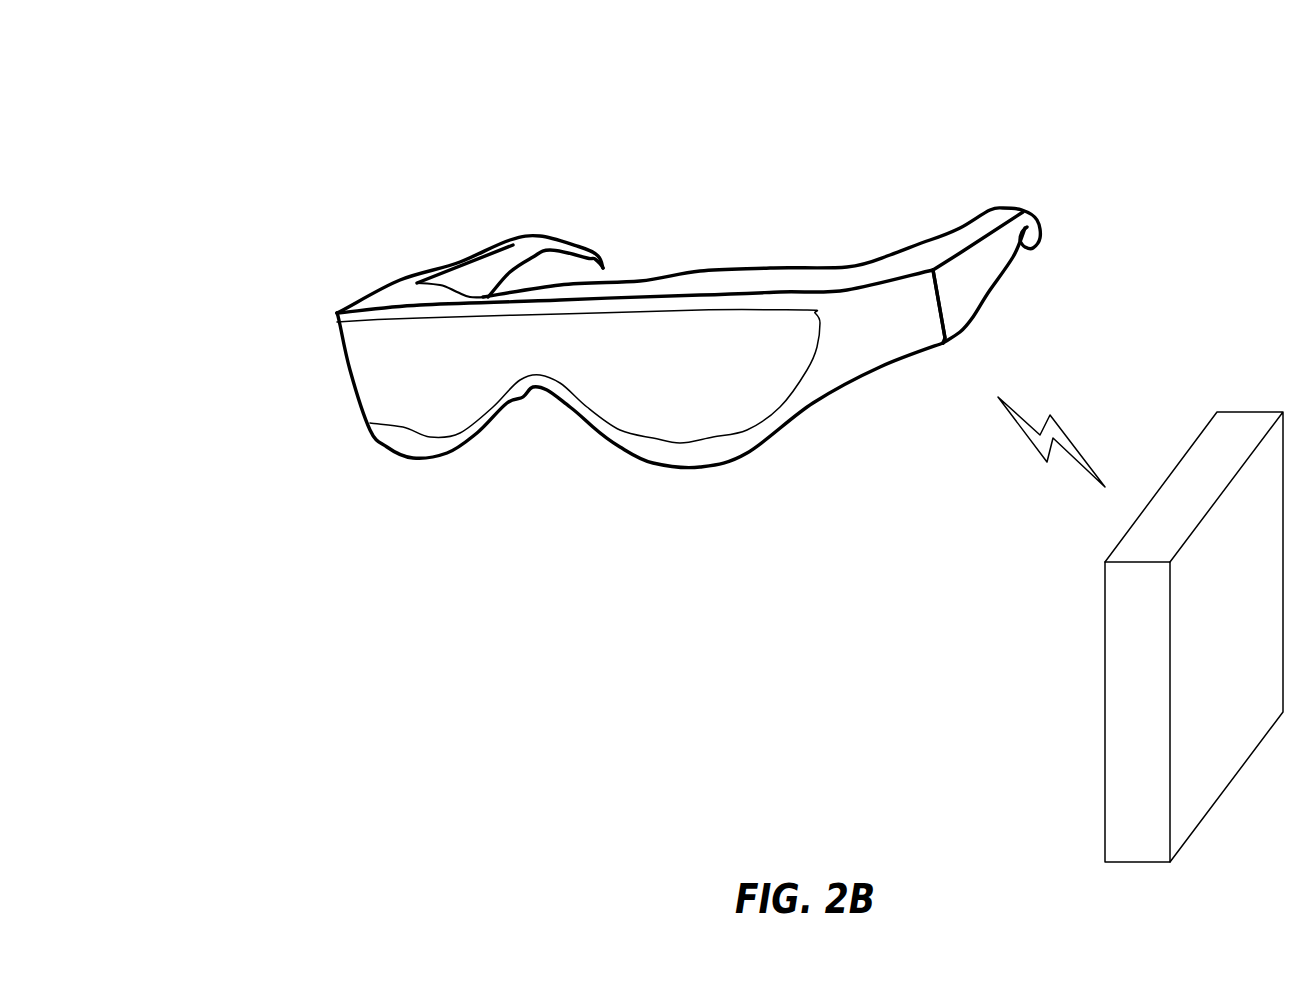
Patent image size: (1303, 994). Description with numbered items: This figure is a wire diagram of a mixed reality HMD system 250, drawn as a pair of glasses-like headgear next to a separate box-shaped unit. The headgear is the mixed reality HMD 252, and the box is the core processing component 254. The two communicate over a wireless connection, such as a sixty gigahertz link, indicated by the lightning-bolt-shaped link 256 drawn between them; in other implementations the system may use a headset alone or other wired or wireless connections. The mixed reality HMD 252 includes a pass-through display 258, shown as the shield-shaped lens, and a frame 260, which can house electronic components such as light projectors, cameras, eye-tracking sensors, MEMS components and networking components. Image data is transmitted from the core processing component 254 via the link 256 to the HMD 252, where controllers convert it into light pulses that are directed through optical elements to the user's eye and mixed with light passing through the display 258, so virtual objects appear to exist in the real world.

The mixed reality HMD system 250 is at (297, 125).
The mixed reality HMD 252 is at (333, 322).
The core processing component 254 is at (1106, 637).
The link 256 is at (1037, 458).
The pass-through display 258 is at (822, 318).
The frame 260 is at (970, 278).